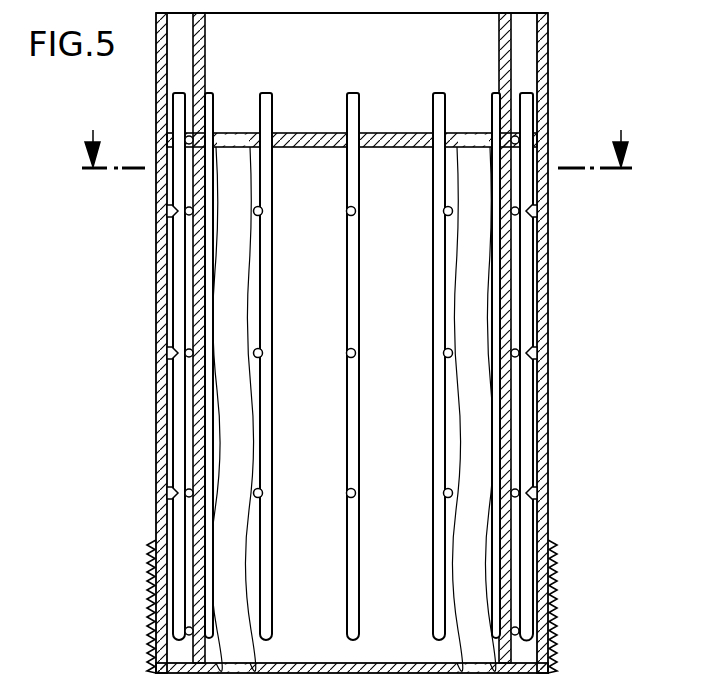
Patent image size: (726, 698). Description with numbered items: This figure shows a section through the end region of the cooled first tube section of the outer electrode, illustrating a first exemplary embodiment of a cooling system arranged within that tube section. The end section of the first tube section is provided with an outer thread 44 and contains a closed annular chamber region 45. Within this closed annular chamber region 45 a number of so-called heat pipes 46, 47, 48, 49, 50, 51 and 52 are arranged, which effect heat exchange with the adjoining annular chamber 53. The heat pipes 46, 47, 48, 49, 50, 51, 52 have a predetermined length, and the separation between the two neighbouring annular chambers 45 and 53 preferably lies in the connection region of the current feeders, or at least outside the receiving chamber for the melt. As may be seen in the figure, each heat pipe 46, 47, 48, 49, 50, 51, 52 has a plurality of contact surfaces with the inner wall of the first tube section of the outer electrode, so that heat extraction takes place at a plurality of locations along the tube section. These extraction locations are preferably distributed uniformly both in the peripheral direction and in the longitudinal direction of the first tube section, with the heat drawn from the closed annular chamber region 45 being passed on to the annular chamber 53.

The annular chamber 53 is at (527, 50).
The outer thread 44 is at (553, 600).
The closed annular chamber region 45 is at (535, 283).
The heat pipe 46 is at (527, 428).
The heat pipe 47 is at (493, 312).
The heat pipe 48 is at (433, 310).
The heat pipe 49 is at (355, 238).
The heat pipe 50 is at (270, 290).
The heat pipe 51 is at (208, 295).
The heat pipe 52 is at (178, 428).